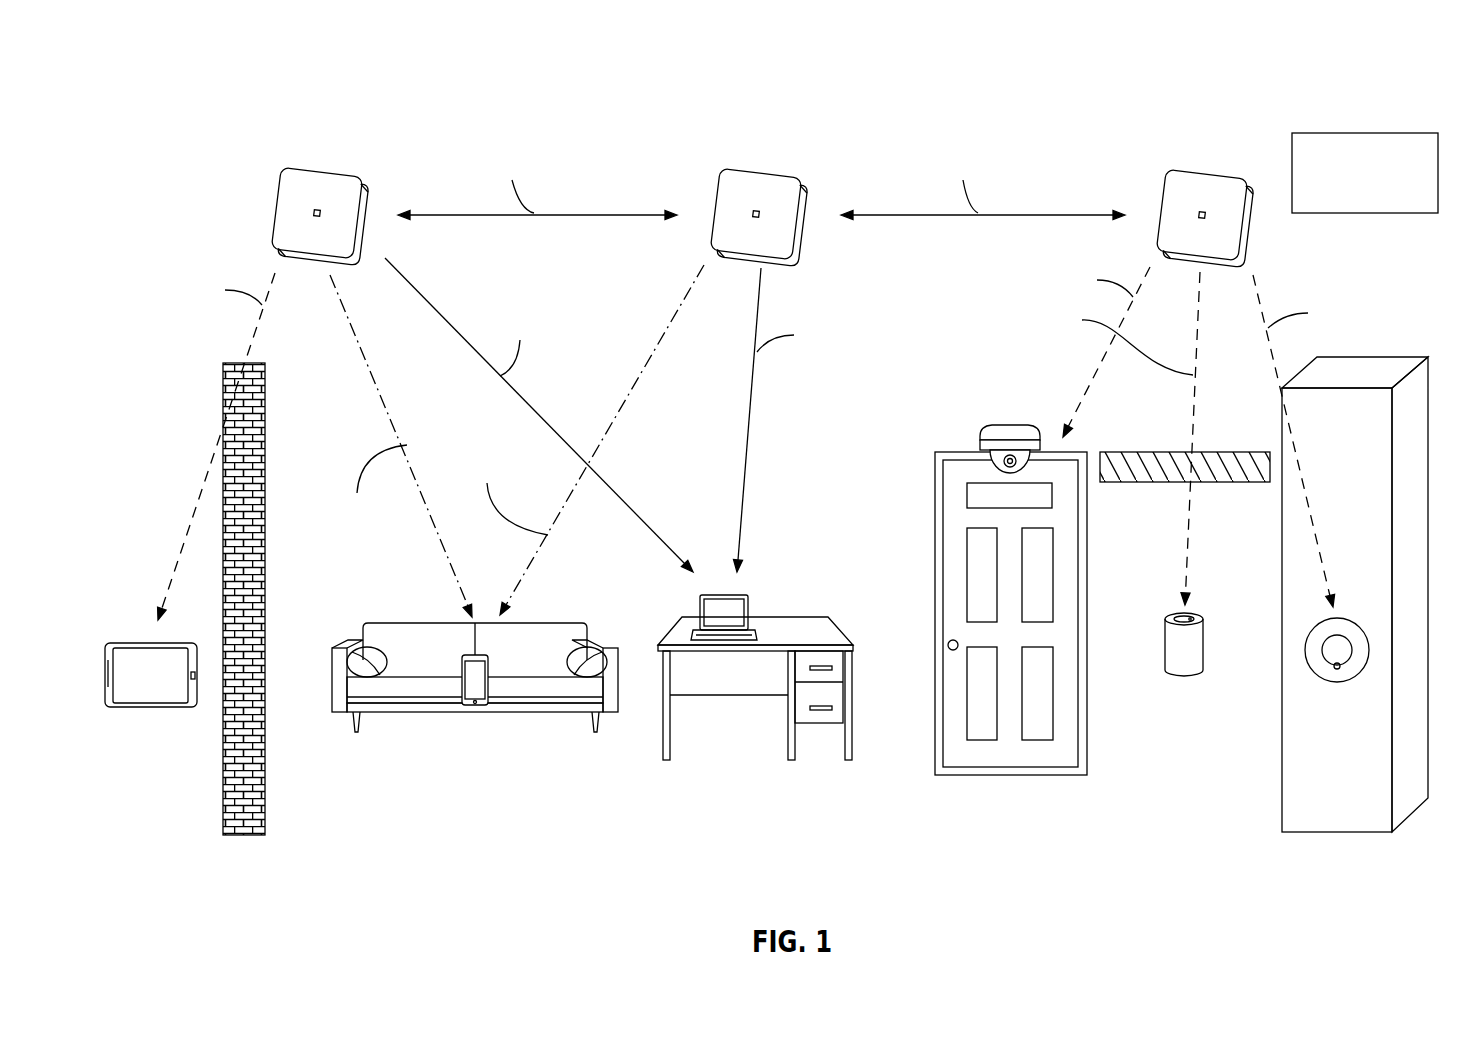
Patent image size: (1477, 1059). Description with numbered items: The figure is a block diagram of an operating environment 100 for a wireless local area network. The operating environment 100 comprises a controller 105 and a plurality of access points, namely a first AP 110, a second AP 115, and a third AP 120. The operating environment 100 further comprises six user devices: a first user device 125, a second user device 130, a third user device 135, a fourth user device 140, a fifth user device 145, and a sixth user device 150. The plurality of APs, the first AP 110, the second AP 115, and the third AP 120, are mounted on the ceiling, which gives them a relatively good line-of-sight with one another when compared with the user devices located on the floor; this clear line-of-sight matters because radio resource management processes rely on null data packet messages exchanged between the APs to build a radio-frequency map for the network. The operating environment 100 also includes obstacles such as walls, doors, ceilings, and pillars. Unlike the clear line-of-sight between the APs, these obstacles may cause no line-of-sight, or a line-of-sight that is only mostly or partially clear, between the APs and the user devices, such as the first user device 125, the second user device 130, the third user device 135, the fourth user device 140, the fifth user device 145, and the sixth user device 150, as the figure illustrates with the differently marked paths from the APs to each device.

The operating environment 100 is at (178, 108).
The controller 105 is at (1404, 133).
The first AP 110 is at (275, 183).
The second AP 115 is at (711, 184).
The third AP 120 is at (1160, 182).
The first user device 125 is at (137, 643).
The second user device 130 is at (472, 657).
The third user device 135 is at (698, 614).
The fourth user device 140 is at (978, 440).
The fifth user device 145 is at (1172, 615).
The sixth user device 150 is at (1317, 623).